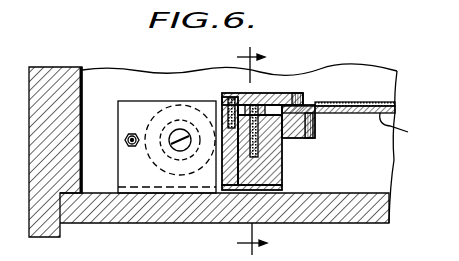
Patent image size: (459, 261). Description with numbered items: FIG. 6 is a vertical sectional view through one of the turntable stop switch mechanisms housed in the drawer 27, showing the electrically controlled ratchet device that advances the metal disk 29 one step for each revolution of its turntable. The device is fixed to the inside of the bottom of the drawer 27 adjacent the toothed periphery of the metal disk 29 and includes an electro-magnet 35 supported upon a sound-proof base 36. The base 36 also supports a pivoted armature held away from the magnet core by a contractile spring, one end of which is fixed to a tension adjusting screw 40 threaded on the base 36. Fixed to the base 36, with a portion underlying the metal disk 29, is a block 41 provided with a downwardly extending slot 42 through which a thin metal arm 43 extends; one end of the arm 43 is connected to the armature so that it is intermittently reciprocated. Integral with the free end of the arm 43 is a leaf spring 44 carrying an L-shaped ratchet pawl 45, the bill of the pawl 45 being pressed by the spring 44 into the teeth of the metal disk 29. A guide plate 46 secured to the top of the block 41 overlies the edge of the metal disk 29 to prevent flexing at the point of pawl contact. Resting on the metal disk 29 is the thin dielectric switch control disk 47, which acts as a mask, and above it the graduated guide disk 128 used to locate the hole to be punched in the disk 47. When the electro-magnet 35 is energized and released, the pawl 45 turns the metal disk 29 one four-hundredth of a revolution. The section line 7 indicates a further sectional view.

The section line 7- 7 is at (243, 151).
The drawer 27 is at (348, 208).
The metal disk 29 is at (404, 132).
The electro-magnet 35 is at (167, 110).
The sound-proof base 36 is at (138, 178).
The tension adjusting screw 40 is at (125, 139).
The block 41 is at (278, 179).
The slot 42 is at (268, 157).
The thin metal arm 43 is at (283, 148).
The leaf spring 44 is at (243, 93).
The L-shaped ratchet pawl 45 is at (279, 93).
The guide plate 46 is at (262, 93).
The switch control disk 47 is at (396, 108).
The guide disk 128 is at (354, 102).